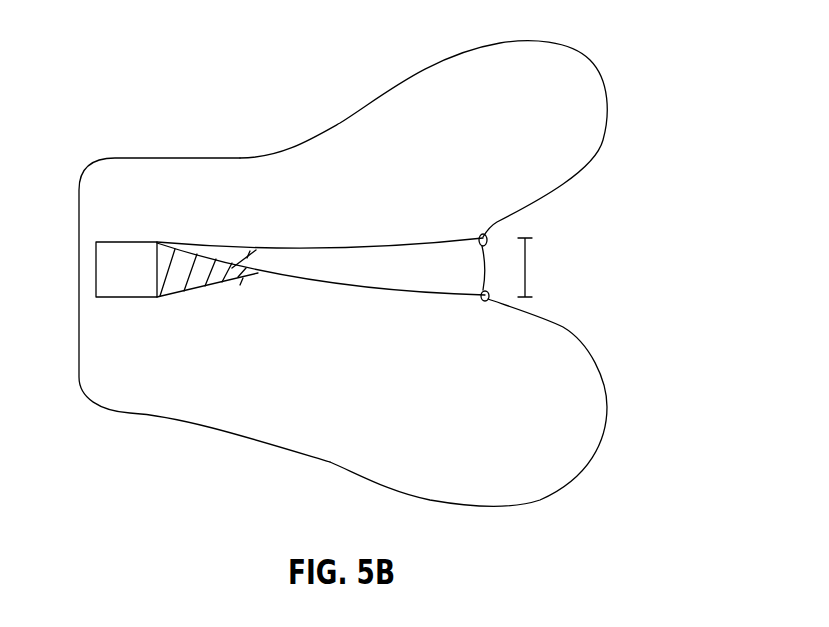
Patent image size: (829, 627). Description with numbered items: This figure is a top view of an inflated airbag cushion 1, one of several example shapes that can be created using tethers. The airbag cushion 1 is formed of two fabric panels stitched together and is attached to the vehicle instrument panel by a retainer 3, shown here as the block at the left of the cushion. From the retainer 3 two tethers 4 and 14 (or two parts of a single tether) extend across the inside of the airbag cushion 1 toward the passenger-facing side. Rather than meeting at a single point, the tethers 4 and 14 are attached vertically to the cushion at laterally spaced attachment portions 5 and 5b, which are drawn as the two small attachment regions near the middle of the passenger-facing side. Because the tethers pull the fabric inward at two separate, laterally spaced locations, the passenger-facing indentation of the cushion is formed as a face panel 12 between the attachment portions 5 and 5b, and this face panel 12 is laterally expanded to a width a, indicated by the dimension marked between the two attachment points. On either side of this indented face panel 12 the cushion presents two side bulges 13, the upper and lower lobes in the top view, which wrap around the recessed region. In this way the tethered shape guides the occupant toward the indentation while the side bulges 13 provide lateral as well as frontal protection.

The airbag cushion 1 is at (170, 412).
The retainer 3 is at (105, 260).
The tether 4 is at (392, 290).
The attachment portion 5 is at (487, 302).
The upper tip 5b is at (481, 234).
The face panel 12 is at (485, 262).
The side bulges 13 is at (607, 110).
The tether 14 is at (378, 243).
The width a is at (526, 258).